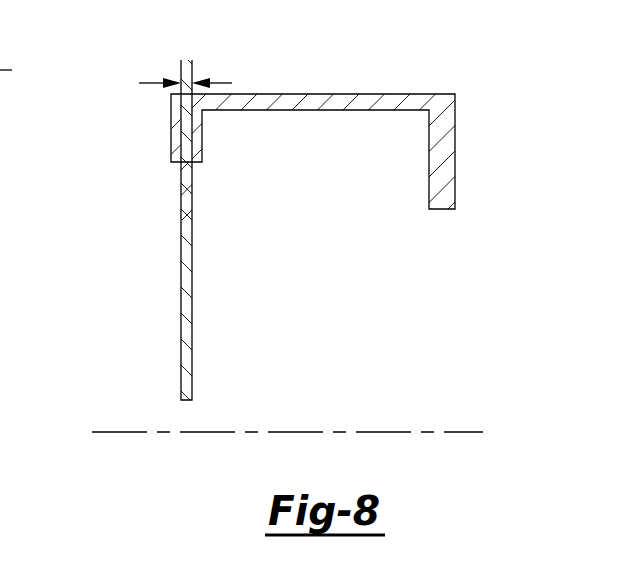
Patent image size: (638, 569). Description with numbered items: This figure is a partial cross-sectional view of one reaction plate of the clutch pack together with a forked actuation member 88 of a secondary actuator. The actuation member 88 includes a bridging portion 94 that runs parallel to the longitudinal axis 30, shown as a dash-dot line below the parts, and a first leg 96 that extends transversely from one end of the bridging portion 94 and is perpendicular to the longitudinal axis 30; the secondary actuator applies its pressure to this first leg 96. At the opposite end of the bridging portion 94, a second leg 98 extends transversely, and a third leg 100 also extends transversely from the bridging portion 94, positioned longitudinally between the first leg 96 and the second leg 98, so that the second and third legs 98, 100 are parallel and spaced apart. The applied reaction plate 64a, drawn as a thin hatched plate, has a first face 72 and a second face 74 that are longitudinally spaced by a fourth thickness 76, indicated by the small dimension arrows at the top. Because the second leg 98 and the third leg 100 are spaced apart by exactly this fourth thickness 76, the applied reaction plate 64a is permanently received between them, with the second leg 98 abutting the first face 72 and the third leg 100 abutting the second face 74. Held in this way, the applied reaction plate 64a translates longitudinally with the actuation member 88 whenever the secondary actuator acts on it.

The longitudinal axis 30 is at (388, 414).
The applied reaction plate 64a is at (188, 207).
The first face 72 is at (166, 277).
The second face 74 is at (207, 342).
The fourth thickness 76 is at (226, 82).
The actuation member 88 is at (384, 75).
The bridging portion 94 is at (322, 110).
The first leg 96 is at (438, 181).
The second leg 98 is at (176, 130).
The third leg 100 is at (197, 153).